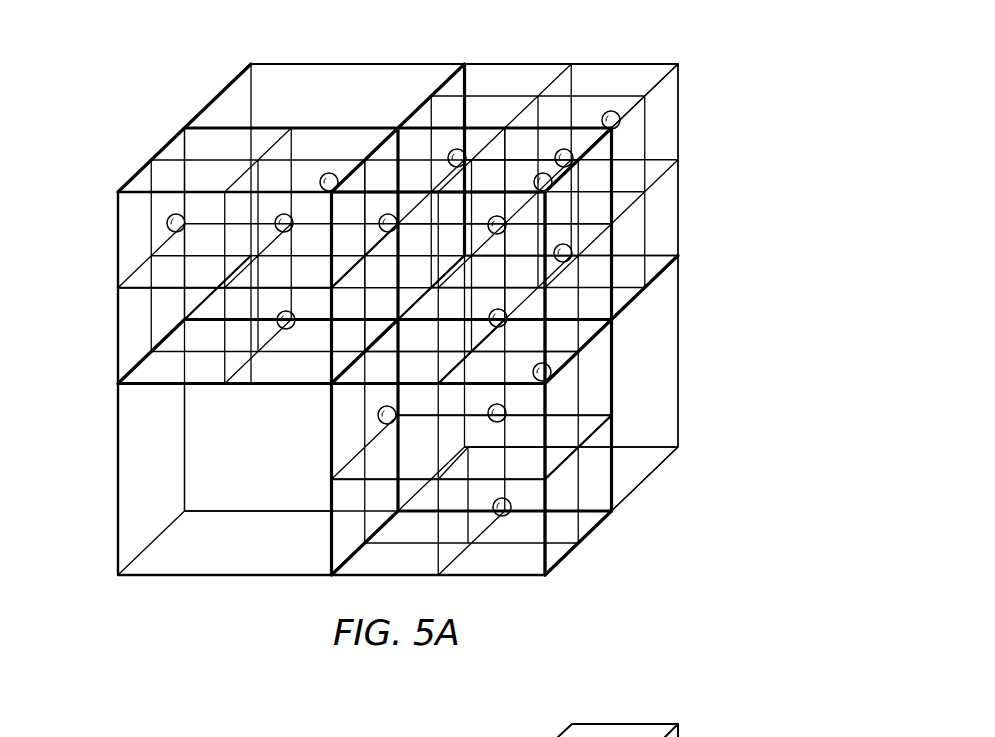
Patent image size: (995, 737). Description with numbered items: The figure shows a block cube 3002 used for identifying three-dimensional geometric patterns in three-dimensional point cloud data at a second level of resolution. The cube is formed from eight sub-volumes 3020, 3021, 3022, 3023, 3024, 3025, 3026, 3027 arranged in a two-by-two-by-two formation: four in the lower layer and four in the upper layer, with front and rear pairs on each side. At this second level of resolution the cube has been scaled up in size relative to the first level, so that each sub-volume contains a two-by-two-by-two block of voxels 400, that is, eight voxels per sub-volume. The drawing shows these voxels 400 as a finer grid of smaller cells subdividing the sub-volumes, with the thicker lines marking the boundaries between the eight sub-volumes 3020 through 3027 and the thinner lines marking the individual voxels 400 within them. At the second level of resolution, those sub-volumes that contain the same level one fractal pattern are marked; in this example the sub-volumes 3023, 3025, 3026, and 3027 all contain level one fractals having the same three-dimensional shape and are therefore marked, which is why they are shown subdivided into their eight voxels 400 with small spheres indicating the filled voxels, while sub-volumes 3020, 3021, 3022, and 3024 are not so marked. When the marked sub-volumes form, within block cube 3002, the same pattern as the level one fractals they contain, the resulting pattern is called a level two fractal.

The block cube 3002 is at (412, 321).
The sub-volume 3020 is at (185, 473).
The sub-volume 3021 is at (667, 363).
The sub-volume 3022 is at (133, 518).
The sub-volume 3023 is at (527, 538).
The sub-volume 3024 is at (228, 93).
The sub-volume 3025 is at (627, 75).
The sub-volume 3026 is at (118, 190).
The sub-volume 3027 is at (543, 302).
The voxel 400 is at (512, 75).